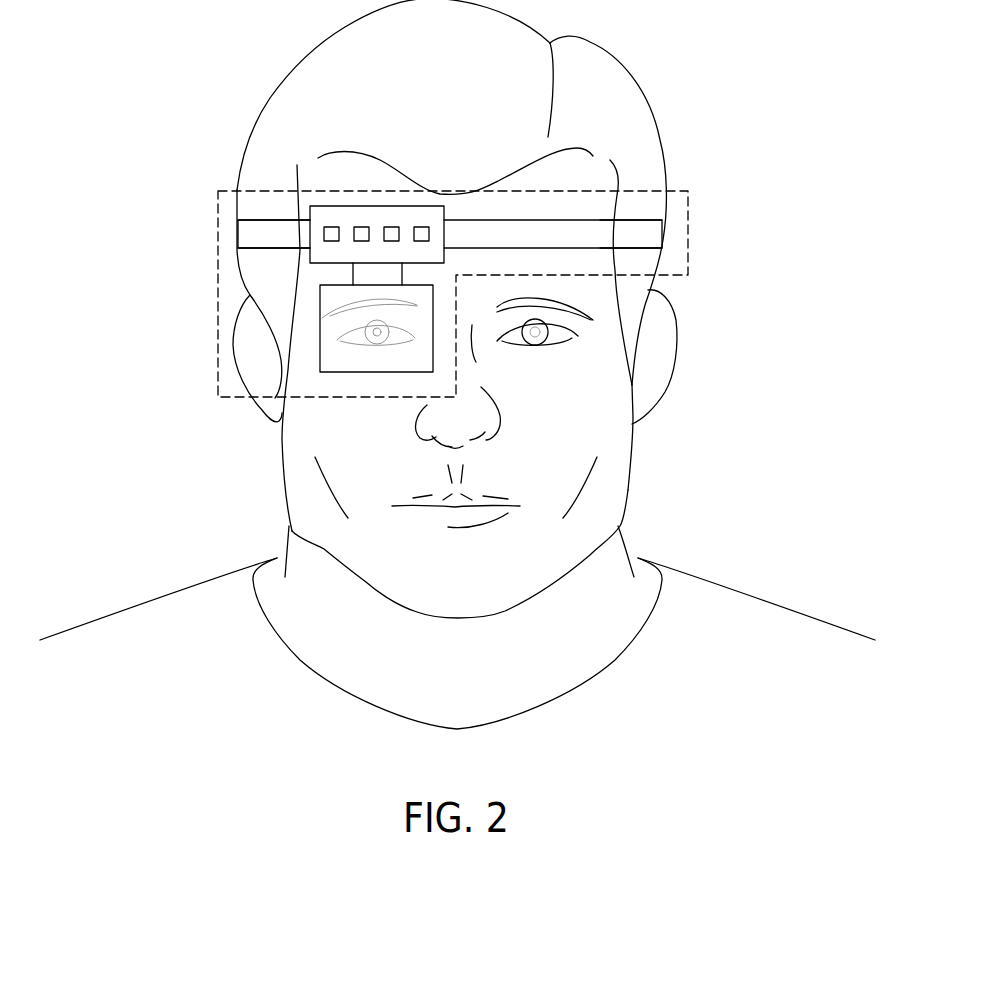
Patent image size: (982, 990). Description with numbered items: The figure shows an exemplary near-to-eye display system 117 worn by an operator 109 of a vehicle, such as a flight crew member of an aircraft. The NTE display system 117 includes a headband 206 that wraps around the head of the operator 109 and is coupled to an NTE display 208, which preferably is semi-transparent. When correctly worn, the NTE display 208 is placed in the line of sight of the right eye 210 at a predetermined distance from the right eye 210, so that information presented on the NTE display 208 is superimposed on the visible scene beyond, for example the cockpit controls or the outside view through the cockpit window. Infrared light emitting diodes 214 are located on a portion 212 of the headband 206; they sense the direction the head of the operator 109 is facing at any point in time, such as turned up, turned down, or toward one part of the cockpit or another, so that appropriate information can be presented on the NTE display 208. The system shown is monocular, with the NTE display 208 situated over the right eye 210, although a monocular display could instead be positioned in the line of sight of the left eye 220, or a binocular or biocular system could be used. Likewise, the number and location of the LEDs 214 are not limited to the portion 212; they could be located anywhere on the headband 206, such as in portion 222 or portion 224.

The operator 109 is at (632, 462).
The NTE display system 117 is at (688, 257).
The headband 206 is at (663, 233).
The NTE display 208 is at (320, 353).
The right eye 210 is at (377, 347).
The portion 212 is at (433, 212).
The infrared light emitting diodes 214 is at (331, 227).
The left eye 220 is at (535, 347).
The portion 222 is at (247, 235).
The portion 224 is at (627, 230).